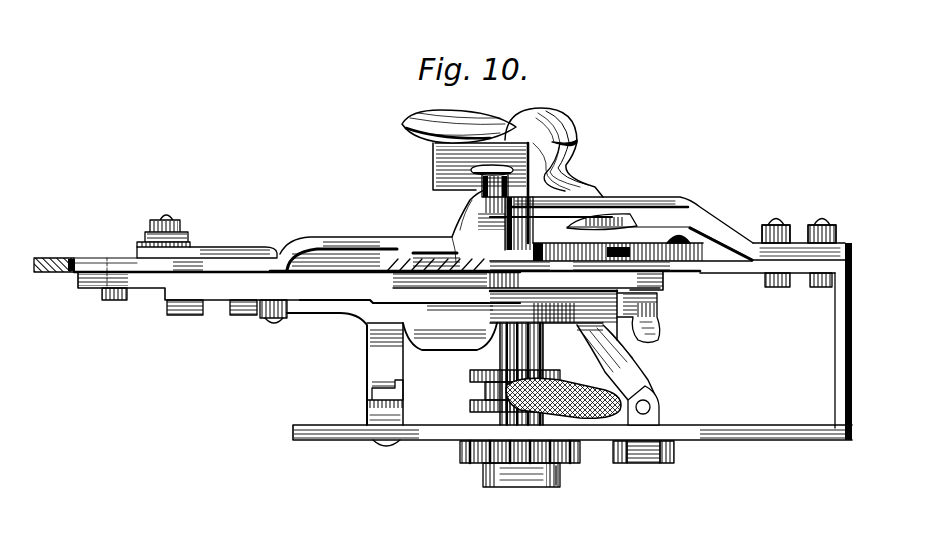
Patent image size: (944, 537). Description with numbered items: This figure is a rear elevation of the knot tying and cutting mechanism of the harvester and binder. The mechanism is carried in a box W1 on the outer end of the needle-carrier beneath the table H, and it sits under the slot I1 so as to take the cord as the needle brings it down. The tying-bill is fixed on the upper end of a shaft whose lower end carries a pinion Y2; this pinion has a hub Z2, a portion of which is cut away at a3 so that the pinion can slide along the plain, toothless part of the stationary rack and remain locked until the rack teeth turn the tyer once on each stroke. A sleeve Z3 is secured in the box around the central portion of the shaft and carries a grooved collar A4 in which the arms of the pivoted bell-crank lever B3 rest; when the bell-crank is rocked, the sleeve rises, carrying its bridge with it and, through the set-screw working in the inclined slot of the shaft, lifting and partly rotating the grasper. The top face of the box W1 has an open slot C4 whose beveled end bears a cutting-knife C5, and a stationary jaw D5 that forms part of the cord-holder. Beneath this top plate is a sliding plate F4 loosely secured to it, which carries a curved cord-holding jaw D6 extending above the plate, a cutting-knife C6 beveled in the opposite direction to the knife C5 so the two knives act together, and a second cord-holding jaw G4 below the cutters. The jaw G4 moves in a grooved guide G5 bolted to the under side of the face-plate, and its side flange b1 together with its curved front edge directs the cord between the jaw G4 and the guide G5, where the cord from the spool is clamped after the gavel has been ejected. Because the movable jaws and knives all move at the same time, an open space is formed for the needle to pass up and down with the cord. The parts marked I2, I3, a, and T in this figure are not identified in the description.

The table H is at (85, 258).
The sliding plate F4 is at (282, 284).
The cord-holding jaw D6 is at (371, 238).
The stationary jaw D5 is at (712, 216).
The box W1 is at (738, 400).
The cord-holding jaw G4 is at (355, 328).
The side flange b1 is at (452, 348).
The cutting-knife C6 is at (443, 272).
The open slot C4 is at (555, 252).
The cutting-knife C5 is at (664, 291).
The grooved guide G5 is at (657, 317).
The sleeve Z3 is at (546, 354).
The grooved collar A4 is at (478, 392).
The roller T is at (563, 398).
The bell-crank lever B3 is at (628, 375).
The pinion Y2 is at (462, 455).
The cut-away portion of hub a3 is at (524, 488).
The hub Z2 is at (561, 481).
The slot I1 is at (436, 167).
The key knob I2 is at (560, 120).
The neck a is at (572, 157).
The small knob I3 is at (475, 190).